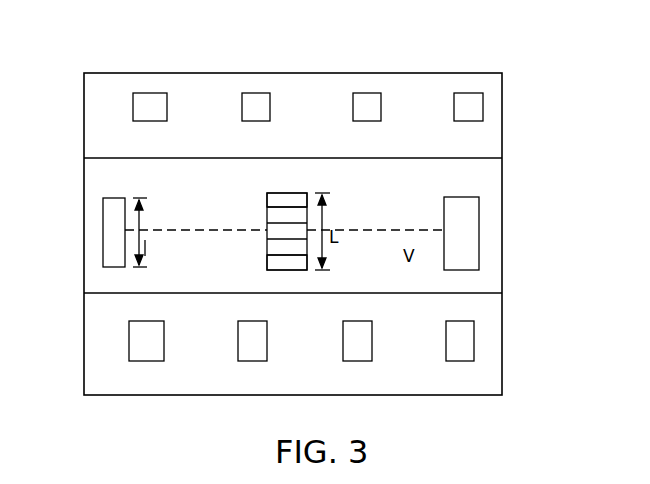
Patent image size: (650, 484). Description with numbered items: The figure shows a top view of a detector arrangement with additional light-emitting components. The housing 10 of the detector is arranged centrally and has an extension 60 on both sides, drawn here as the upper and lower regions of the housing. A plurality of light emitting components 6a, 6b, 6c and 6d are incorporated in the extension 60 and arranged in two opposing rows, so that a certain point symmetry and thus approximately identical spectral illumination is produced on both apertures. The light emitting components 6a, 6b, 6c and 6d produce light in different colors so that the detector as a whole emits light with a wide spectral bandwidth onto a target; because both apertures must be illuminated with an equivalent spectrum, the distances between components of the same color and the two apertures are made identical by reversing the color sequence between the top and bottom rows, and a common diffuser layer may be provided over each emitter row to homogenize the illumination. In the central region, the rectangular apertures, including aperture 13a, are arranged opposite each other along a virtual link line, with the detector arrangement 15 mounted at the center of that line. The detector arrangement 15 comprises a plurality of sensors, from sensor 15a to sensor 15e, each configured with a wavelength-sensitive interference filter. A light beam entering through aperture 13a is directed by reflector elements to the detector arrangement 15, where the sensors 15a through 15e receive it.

The housing 10 is at (502, 193).
The extension 60 is at (110, 72).
The light emitting component 6a is at (167, 112).
The light emitting component 6b is at (270, 112).
The light emitting component 6c is at (381, 112).
The light emitting component 6d is at (454, 112).
The aperture 13a is at (103, 204).
The detector arrangement 15 is at (267, 231).
The sensor 15a is at (267, 194).
The sensor 15e is at (267, 262).